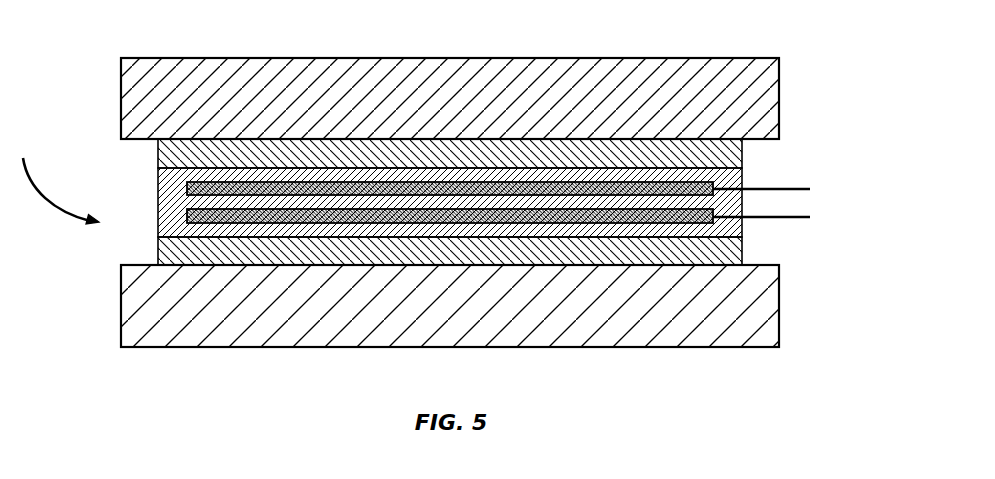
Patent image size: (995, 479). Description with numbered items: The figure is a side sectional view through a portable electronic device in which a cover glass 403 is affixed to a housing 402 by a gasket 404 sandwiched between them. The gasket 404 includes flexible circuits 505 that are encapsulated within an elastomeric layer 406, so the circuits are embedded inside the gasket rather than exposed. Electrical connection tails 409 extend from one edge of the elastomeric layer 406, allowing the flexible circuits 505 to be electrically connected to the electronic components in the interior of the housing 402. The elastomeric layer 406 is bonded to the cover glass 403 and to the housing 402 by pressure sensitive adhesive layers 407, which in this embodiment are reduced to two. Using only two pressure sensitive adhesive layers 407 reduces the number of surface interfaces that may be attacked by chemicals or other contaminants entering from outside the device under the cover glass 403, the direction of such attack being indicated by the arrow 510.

The cover glass 403 is at (718, 58).
The housing 402 is at (779, 300).
The gasket 404 is at (152, 139).
The elastomeric layer 406 is at (742, 200).
The pressure sensitive adhesive layers 407 is at (742, 150).
The electrical connection tails 409 is at (817, 188).
The flexible circuits 505 is at (282, 188).
The arrow 510 is at (56, 202).